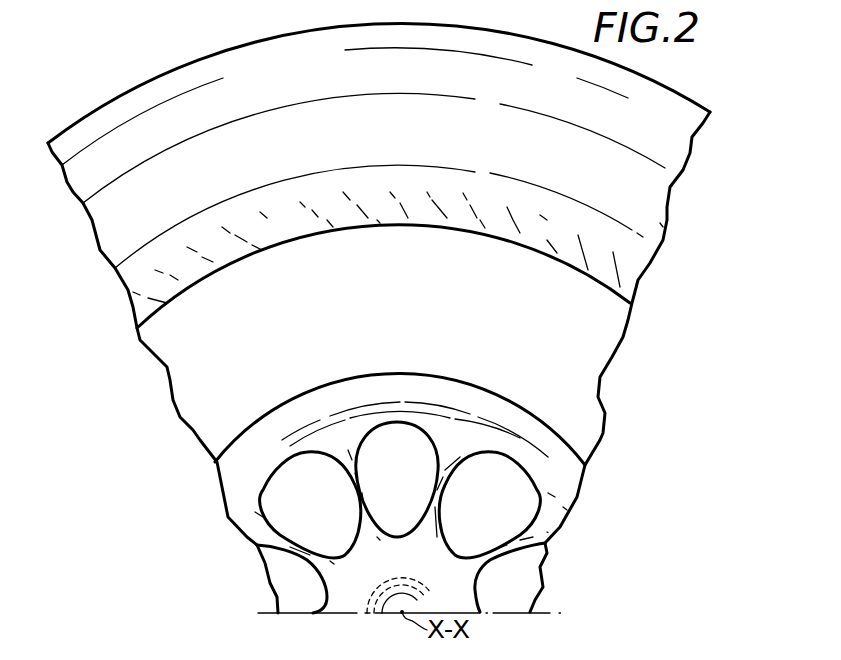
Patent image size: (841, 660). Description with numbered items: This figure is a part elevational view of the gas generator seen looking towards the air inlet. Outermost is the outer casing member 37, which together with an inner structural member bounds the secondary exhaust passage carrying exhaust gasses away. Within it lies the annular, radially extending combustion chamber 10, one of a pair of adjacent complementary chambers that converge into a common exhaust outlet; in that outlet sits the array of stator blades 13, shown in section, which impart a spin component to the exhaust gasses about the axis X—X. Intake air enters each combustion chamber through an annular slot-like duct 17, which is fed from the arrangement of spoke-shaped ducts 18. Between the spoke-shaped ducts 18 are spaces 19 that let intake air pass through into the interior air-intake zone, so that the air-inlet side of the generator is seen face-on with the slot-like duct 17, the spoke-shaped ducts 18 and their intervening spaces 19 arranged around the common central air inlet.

The combustion chamber 10 is at (178, 362).
The stator blades 13 is at (513, 222).
The annular slot-like duct 17 is at (232, 473).
The spoke-shaped ducts 18 is at (362, 500).
The spaces 19 is at (307, 505).
The outer casing member 37 is at (210, 68).